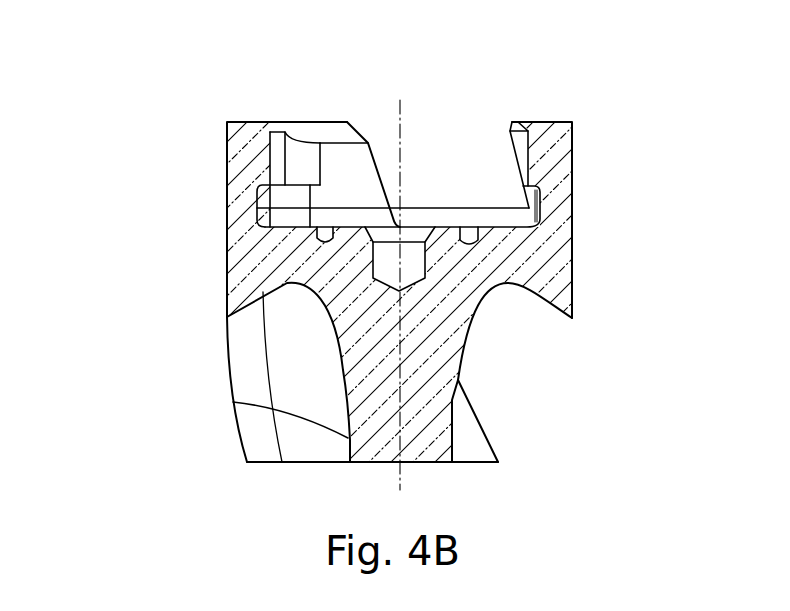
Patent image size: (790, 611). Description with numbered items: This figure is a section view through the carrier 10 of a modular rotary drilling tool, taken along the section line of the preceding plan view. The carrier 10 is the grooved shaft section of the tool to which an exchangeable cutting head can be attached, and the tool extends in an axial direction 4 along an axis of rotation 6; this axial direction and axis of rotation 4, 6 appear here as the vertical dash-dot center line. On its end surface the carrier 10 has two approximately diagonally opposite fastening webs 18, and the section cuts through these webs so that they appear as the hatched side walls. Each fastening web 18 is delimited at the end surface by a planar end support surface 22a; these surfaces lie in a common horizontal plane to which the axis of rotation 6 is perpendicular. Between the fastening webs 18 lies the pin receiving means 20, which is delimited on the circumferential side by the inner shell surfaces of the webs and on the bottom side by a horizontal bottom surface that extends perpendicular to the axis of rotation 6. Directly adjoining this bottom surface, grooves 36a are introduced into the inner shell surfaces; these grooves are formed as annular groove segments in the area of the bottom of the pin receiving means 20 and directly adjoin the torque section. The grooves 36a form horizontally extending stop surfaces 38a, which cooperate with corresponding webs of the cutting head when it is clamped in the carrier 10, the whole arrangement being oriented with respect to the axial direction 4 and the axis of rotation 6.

The carrier 10 is at (395, 305).
The fastening web 18 is at (555, 152).
The pin receiving means 20 is at (438, 157).
The end support surface 22a is at (247, 122).
The groove 36a is at (542, 200).
The stop surface 38a is at (513, 186).
The section planes 4, 6 is at (458, 311).
The axial direction 4 is at (458, 311).
The axis of rotation 6 is at (400, 478).